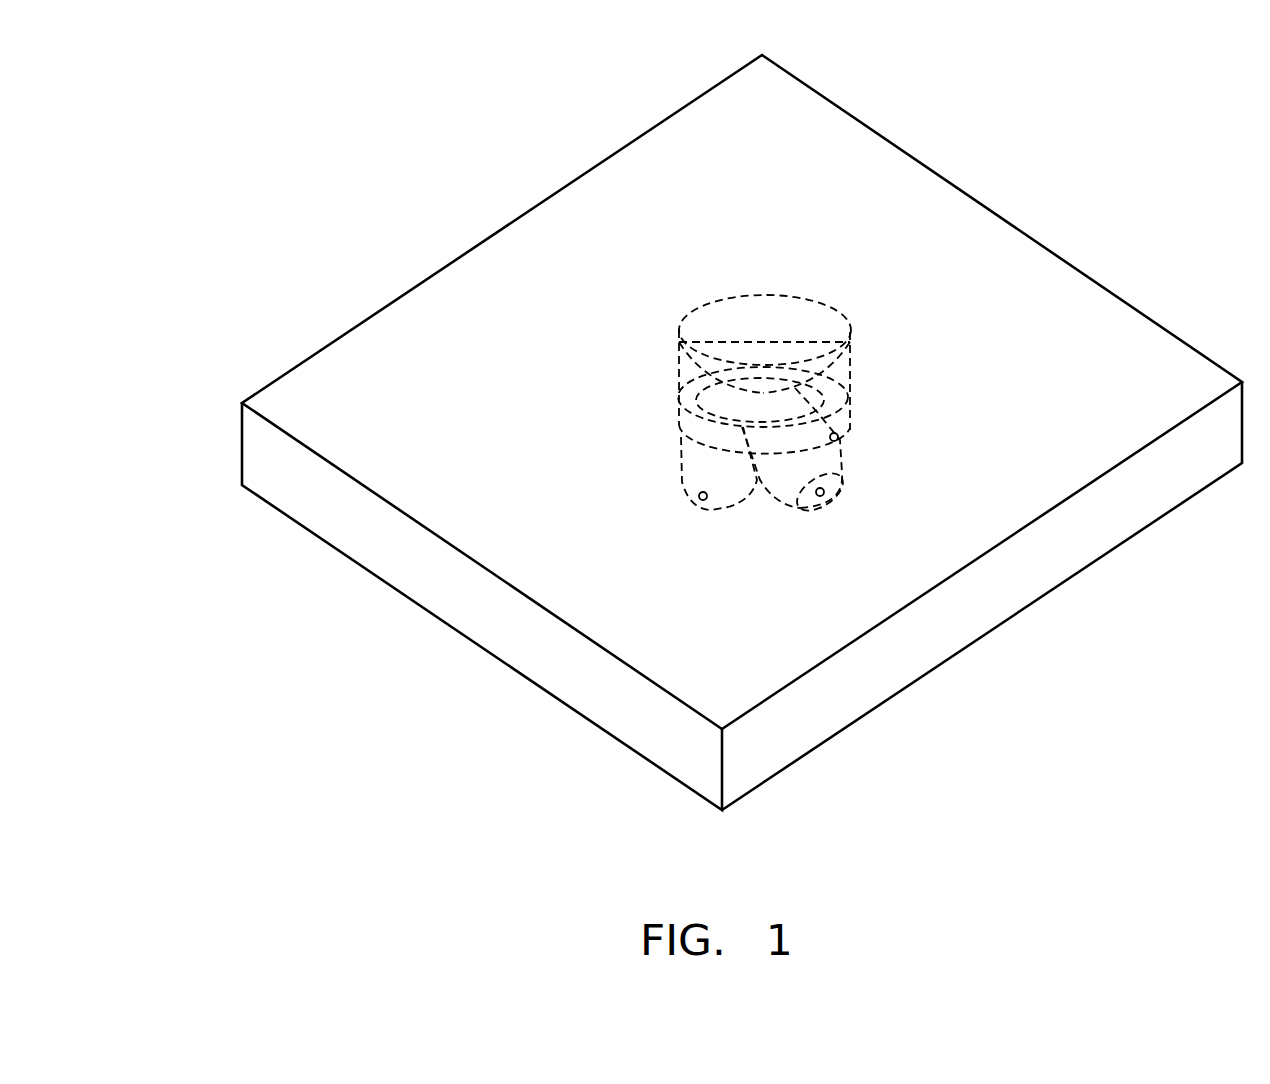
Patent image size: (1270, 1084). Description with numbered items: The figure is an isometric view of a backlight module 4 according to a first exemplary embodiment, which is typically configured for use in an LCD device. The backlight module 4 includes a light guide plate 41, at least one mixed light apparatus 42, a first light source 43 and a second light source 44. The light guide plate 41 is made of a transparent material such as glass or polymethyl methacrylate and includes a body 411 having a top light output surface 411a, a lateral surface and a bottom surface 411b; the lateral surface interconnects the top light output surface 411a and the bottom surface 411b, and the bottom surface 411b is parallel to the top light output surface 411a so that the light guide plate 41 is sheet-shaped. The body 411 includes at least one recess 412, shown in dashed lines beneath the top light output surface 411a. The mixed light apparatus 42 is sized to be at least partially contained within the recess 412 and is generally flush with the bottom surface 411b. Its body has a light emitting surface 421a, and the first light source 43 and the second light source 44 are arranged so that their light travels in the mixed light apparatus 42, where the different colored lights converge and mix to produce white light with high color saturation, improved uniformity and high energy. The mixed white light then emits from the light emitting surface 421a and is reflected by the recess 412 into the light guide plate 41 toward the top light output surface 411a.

The backlight module 4 is at (250, 116).
The light guide plate 41 is at (742, 449).
The body 411 is at (468, 610).
The top light output surface 411a is at (1007, 263).
The bottom surface 411b is at (762, 786).
The recess 412 is at (828, 406).
The mixed light apparatus 42 is at (733, 439).
The light emitting surface 421a is at (727, 417).
The first light source 43 is at (710, 503).
The second light source 44 is at (838, 495).